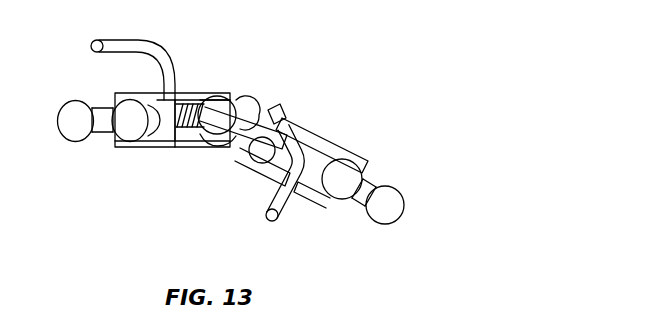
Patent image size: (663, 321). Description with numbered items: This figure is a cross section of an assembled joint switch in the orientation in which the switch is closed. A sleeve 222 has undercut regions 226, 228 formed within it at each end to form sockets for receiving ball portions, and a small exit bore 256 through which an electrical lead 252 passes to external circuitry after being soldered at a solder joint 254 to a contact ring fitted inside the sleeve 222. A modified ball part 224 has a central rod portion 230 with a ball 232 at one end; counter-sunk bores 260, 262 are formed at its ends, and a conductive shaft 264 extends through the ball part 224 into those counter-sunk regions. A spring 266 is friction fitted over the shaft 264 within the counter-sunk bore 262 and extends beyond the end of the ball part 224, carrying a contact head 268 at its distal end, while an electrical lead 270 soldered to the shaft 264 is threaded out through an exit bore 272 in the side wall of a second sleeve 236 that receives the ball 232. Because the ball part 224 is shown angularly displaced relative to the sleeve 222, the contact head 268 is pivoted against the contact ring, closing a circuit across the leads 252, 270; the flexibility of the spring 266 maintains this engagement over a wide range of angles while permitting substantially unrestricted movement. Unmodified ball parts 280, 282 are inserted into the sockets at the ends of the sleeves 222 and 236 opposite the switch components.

The sleeve 222 is at (193, 102).
The modified ball part 224 is at (235, 147).
The undercut region 226 is at (218, 148).
The undercut region 228 is at (112, 142).
The central rod portion 230 is at (280, 79).
The ball 232 is at (232, 98).
The second sleeve 236 is at (346, 160).
The electrical lead 252 is at (110, 38).
The solder joint 254 is at (167, 110).
The exit bore 256 is at (173, 99).
The counter-sunk bore 260 is at (291, 122).
The counter-sunk bore 262 is at (193, 136).
The conductive shaft 264 is at (228, 112).
The spring 266 is at (201, 99).
The contact head 268 is at (157, 146).
The electrical lead 270 is at (282, 222).
The exit bore 272 is at (304, 190).
The unmodified ball part 280 is at (73, 100).
The unmodified ball part 282 is at (384, 225).